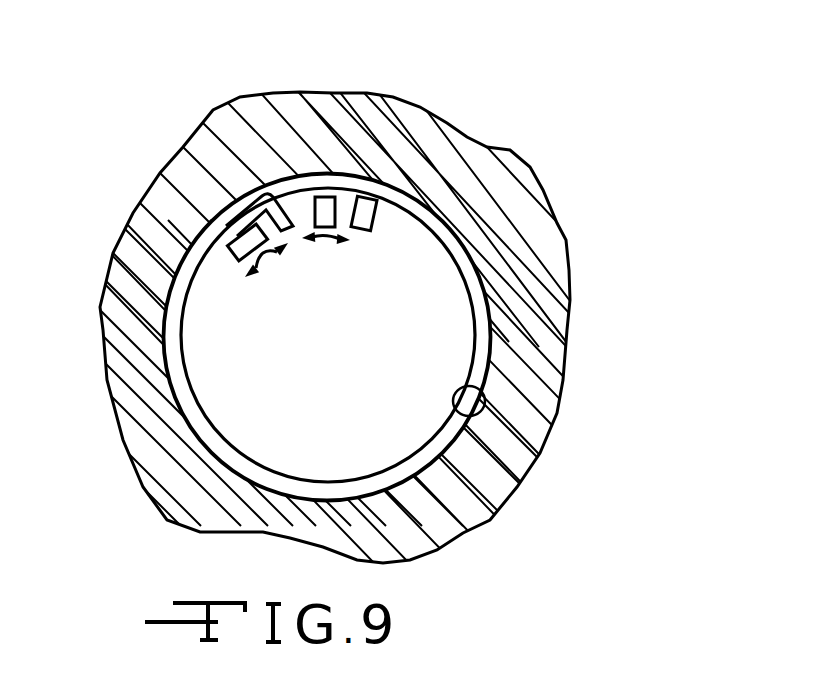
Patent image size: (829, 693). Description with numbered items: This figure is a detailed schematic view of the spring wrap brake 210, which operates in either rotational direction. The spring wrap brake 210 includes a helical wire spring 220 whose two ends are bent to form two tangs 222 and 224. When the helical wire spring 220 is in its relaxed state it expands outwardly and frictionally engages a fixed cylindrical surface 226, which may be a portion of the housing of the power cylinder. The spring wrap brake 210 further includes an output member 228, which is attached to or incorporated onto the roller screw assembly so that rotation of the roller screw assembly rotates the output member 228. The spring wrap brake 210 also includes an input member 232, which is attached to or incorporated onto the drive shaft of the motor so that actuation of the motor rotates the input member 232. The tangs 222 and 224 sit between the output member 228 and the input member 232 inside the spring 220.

The spring wrap brake 210 is at (500, 258).
The helical wire spring 220 is at (488, 330).
The tang 222 is at (288, 228).
The tang 224 is at (373, 213).
The fixed cylindrical surface 226 is at (475, 415).
The output member 228 is at (325, 197).
The input member 232 is at (237, 258).